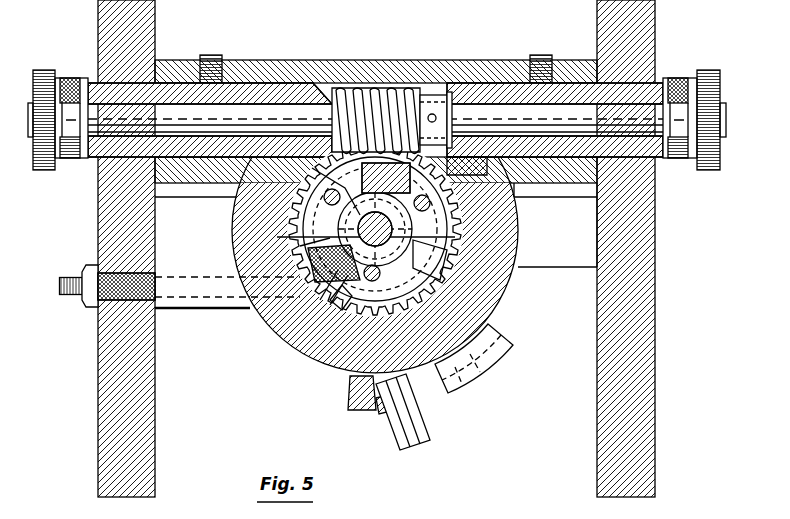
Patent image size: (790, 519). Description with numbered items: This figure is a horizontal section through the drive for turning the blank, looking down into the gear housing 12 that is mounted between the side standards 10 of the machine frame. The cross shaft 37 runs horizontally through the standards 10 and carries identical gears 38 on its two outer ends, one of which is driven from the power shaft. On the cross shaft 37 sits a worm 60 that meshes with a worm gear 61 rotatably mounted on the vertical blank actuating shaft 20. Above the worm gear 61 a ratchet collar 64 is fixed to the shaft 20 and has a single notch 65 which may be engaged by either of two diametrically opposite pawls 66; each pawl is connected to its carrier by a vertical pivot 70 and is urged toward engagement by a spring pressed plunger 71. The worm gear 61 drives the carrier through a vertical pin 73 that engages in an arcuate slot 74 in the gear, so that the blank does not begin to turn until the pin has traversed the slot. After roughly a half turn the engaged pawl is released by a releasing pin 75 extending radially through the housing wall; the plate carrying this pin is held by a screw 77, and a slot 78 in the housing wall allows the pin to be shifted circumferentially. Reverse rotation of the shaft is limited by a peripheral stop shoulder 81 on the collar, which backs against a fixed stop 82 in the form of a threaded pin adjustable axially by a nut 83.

The side standards 10 is at (99, 211).
The gear housing 12 is at (532, 228).
The actuating shaft 20 is at (375, 265).
The cross shaft 37 is at (112, 107).
The gears 38 is at (40, 170).
The worm 60 is at (395, 100).
The worm gear 61 is at (300, 308).
The ratchet collar 64 is at (466, 240).
The notch 65 is at (292, 238).
The pawls 66 is at (282, 212).
The vertical pivots 70 is at (297, 173).
The spring pressed plunger 71 is at (330, 162).
The vertical pin 73 is at (457, 183).
The arcuate slot 74 is at (466, 216).
The releasing pin 75 is at (493, 343).
The screw 77 is at (422, 443).
The slot 78 is at (433, 393).
The peripheral stop shoulder 81 is at (346, 326).
The fixed stop 82 is at (230, 297).
The nut 83 is at (86, 306).